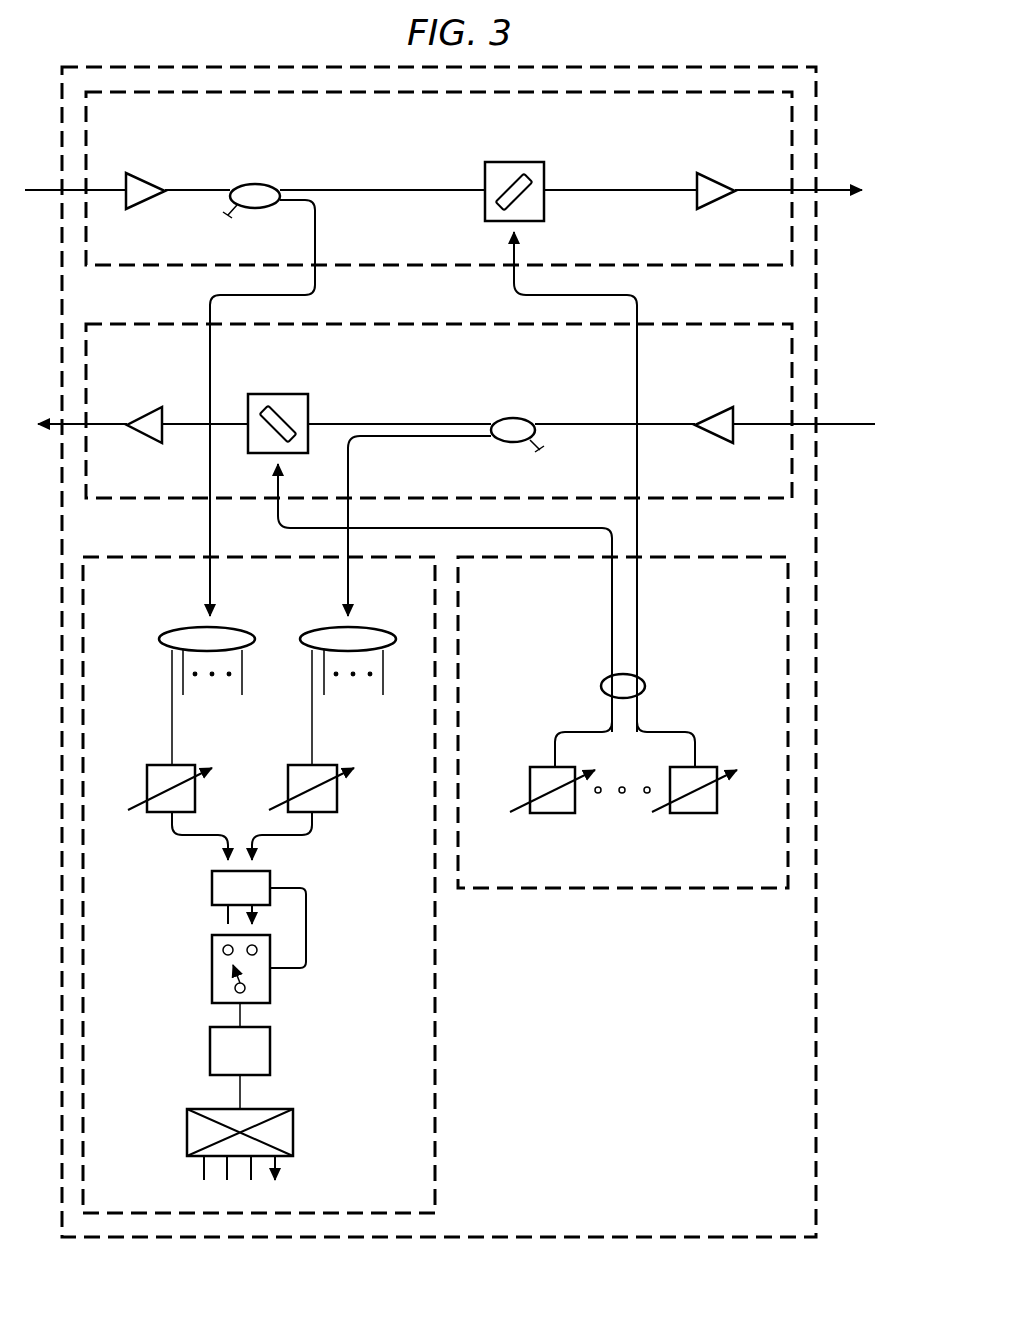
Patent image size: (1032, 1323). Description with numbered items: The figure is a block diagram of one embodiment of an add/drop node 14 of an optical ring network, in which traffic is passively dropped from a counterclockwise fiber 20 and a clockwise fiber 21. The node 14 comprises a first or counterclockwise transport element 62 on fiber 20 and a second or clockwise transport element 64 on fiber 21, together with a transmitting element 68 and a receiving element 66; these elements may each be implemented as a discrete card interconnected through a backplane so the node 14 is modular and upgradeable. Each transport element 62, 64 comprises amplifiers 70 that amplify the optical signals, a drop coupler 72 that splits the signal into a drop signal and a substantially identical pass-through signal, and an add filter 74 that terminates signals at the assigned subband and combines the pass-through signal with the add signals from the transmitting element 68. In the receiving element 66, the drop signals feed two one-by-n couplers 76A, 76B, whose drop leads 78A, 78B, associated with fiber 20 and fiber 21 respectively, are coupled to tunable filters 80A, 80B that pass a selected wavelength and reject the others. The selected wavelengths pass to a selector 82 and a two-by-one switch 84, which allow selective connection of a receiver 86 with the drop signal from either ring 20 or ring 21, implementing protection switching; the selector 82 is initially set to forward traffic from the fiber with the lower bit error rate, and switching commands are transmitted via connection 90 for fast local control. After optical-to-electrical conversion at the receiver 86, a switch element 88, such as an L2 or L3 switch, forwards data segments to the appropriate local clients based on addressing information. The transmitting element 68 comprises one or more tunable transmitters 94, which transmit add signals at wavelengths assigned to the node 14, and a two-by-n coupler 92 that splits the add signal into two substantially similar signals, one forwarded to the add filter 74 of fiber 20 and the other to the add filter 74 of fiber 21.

The add/drop node 14 is at (216, 60).
The fiber 20 is at (843, 188).
The fiber 21 is at (845, 422).
The counterclockwise transport element 62 is at (430, 153).
The clockwise transport element 64 is at (430, 387).
The receiving element 66 is at (445, 1086).
The transmitting element 68 is at (647, 898).
The amplifier 70 is at (146, 176).
The drop coupler 72 is at (250, 185).
The add filter 74 is at (526, 161).
The 1×n coupler 76A is at (186, 628).
The 1×n coupler 76B is at (366, 628).
The drop lead 78A is at (173, 735).
The drop lead 78B is at (313, 735).
The tunable filter 80A is at (158, 822).
The tunable filter 80B is at (322, 822).
The selector 82 is at (211, 895).
The 2×1 switch 84 is at (211, 972).
The receiver 86 is at (209, 1050).
The switch element 88 is at (186, 1132).
The connection 90 is at (307, 930).
The 2×n coupler 92 is at (601, 686).
The tunable transmitter 94 is at (546, 814).